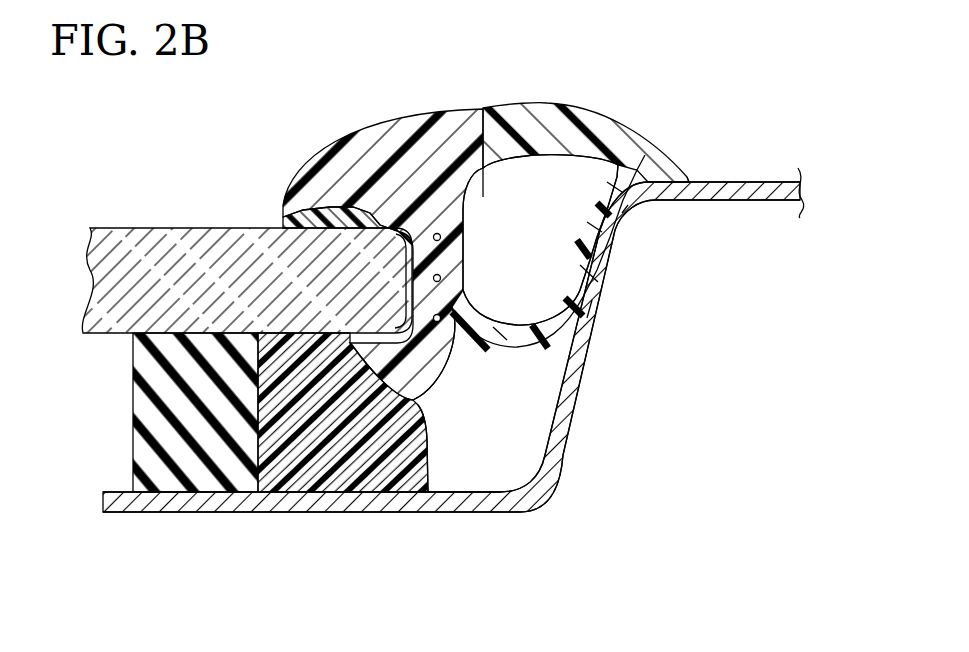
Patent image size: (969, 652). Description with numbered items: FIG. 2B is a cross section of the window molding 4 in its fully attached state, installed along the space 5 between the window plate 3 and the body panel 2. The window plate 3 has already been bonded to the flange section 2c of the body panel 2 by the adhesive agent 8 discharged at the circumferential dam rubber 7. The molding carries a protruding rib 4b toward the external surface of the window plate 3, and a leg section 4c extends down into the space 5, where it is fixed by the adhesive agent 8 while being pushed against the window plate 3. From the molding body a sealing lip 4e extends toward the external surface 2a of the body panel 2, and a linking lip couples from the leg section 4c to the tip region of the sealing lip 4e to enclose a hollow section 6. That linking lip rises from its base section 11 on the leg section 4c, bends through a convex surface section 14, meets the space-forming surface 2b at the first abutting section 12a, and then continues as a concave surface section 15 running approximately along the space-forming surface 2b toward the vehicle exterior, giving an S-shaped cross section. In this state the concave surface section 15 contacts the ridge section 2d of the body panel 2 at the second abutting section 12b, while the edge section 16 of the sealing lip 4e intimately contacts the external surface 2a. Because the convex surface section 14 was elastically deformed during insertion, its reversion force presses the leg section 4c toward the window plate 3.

The body panel 2 is at (730, 202).
The external surface of the body panel 2a is at (765, 181).
The space-forming surface of the body panel 2b is at (562, 456).
The flange section of the body panel 2c is at (362, 514).
The ridge section of the body panel 2d is at (615, 175).
The window plate 3 is at (145, 227).
The window molding 4 is at (420, 107).
The protruding rib 4b is at (298, 168).
The leg section 4c is at (425, 418).
The sealing lip 4e is at (540, 104).
The space 5 is at (550, 388).
The hollow section 6 is at (530, 283).
The dam rubber 7 is at (140, 377).
The adhesive agent 8 is at (293, 484).
The base section 11 is at (455, 337).
The first abutting section 12a is at (590, 300).
The second abutting section 12b is at (632, 205).
The convex surface section 14 is at (516, 360).
The concave surface section 15 is at (585, 215).
The edge section 16 is at (690, 176).